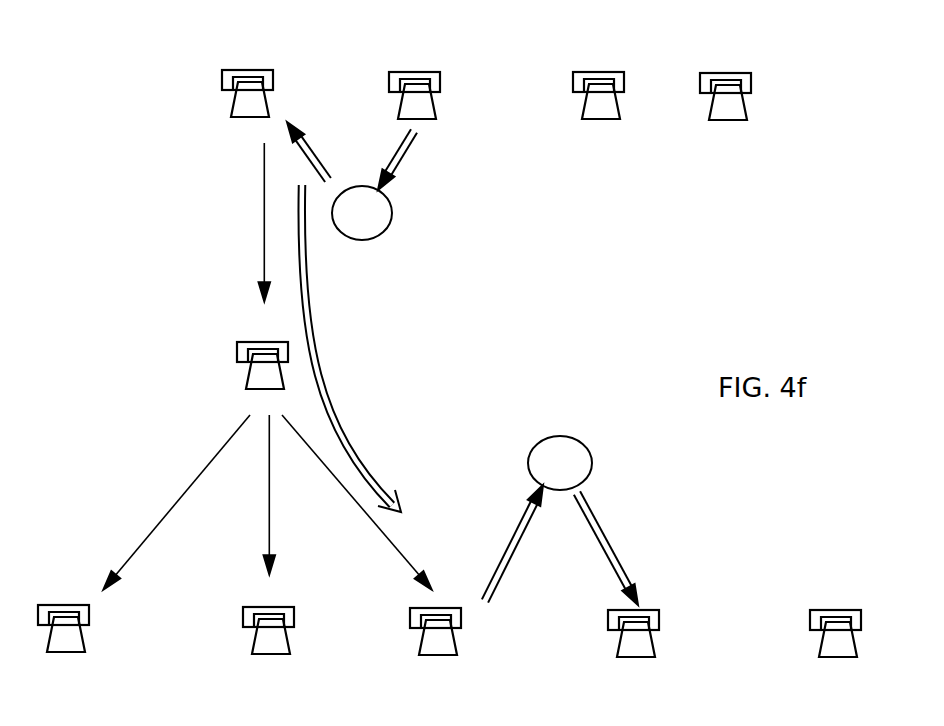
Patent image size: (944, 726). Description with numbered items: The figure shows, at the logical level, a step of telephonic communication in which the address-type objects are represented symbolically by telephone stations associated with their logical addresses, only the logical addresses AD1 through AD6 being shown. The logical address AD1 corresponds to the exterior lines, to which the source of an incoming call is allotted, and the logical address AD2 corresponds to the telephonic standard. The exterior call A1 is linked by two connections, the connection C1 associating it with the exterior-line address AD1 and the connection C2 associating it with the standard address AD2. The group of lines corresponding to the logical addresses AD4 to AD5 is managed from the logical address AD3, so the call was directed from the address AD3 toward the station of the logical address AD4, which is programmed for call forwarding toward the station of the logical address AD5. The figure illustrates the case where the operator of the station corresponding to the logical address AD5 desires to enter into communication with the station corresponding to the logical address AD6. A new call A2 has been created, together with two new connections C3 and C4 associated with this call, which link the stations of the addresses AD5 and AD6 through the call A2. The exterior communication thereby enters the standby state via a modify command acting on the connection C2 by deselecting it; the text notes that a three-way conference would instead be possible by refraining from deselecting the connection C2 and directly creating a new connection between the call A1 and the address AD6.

The logical address AD1 is at (447, 95).
The logical address AD2 is at (284, 93).
The logical address AD3 is at (224, 366).
The logical address AD4 is at (96, 629).
The logical address AD5 is at (467, 633).
The logical address AD6 is at (665, 635).
The call A1 is at (362, 213).
The new call A2 is at (560, 463).
The connection C1 is at (420, 159).
The connection C2 is at (344, 317).
The new connection C3 is at (521, 544).
The new connection C4 is at (617, 548).